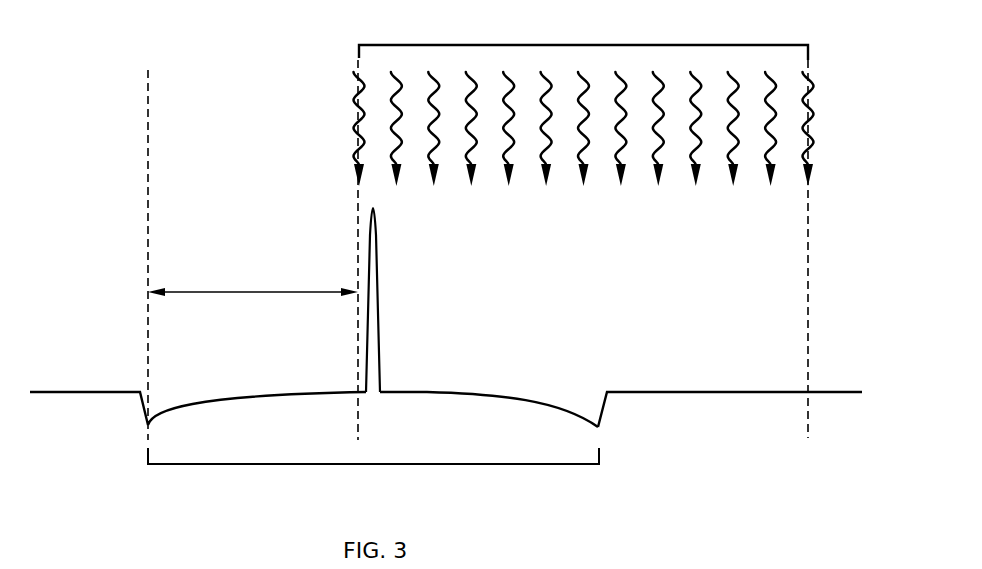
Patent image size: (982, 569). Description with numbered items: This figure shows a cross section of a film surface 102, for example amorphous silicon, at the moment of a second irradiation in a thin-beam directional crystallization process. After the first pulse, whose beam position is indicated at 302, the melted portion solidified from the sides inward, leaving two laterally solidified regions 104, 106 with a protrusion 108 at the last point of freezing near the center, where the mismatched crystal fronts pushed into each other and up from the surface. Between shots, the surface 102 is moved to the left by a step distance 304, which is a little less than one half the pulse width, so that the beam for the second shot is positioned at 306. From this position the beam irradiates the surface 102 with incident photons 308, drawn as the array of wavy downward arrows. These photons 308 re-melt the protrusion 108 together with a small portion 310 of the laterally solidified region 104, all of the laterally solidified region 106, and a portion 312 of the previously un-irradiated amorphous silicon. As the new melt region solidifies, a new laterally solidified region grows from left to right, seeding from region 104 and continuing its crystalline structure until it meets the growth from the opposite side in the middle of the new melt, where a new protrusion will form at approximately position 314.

The film surface 102 is at (603, 348).
The laterally solidified region 104 is at (217, 398).
The laterally solidified region 106 is at (410, 390).
The protrusion 108 is at (380, 297).
The beam position during first irradiation 302 is at (243, 464).
The step distance 304 is at (187, 292).
The beam position during second shot 306 is at (485, 45).
The incident photons 308 is at (847, 86).
The small portion of lateral solidified region 310 is at (362, 395).
The portion of un-irradiated amorphous silicon 312 is at (697, 392).
The position of new protrusion 314 is at (599, 501).